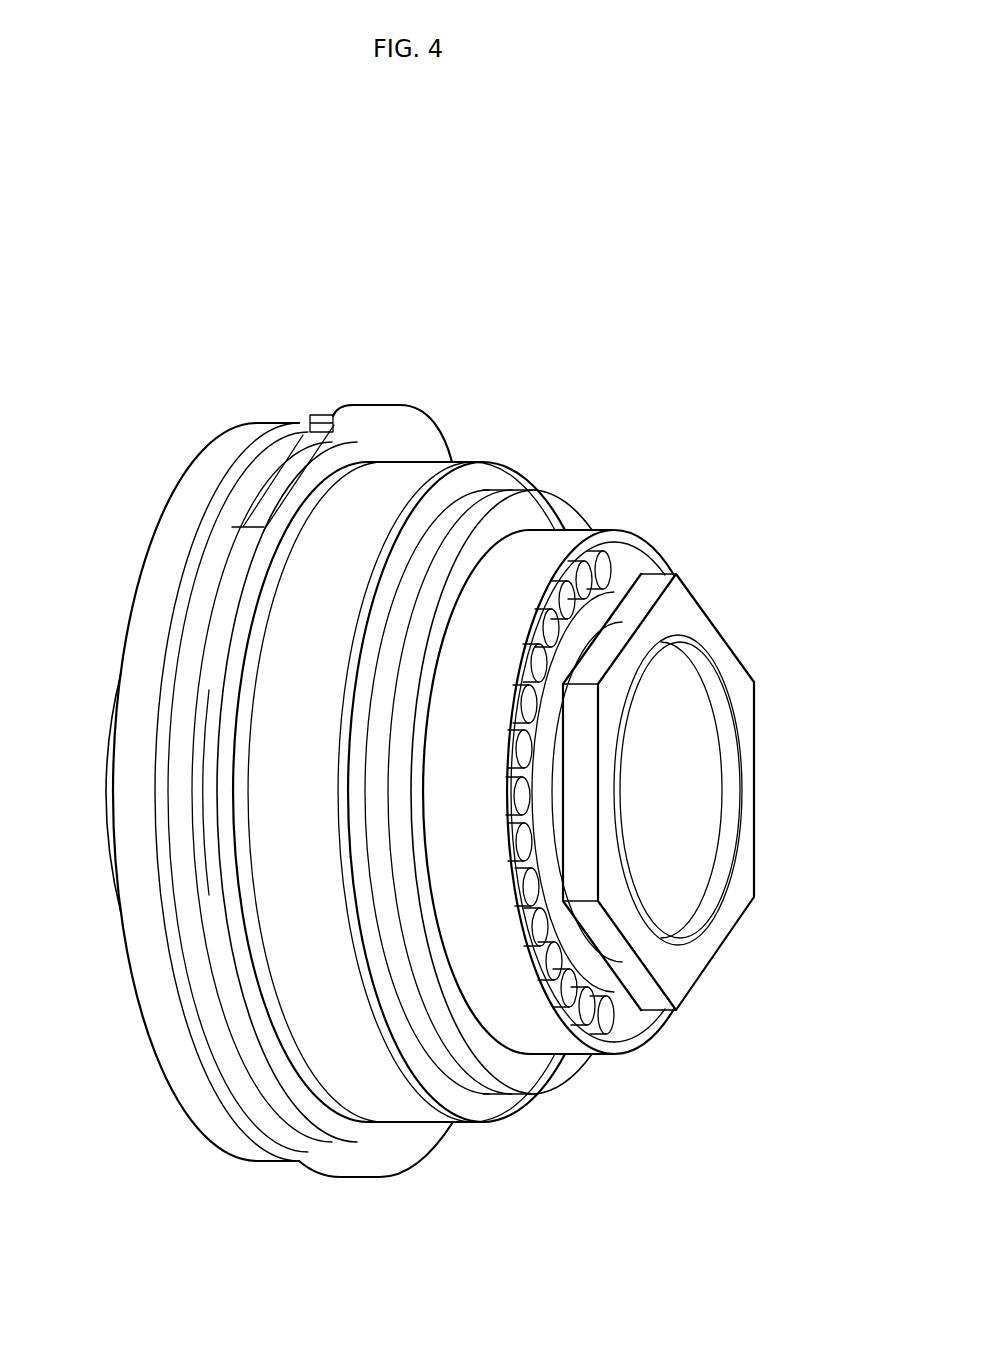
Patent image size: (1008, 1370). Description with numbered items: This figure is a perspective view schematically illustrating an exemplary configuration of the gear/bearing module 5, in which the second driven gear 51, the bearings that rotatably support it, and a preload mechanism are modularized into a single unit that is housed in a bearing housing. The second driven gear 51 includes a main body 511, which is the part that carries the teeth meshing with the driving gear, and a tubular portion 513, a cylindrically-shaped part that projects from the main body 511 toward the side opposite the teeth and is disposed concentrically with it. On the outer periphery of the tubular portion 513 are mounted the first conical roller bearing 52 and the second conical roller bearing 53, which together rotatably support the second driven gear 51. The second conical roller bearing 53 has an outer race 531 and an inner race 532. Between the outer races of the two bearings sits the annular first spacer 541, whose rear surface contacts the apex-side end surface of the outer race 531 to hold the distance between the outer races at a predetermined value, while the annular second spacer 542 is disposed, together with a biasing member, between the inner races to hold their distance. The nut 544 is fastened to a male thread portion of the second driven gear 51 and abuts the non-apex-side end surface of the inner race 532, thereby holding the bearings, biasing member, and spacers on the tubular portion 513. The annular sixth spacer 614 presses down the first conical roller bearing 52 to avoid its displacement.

The gear/bearing module 5 is at (374, 212).
The second driven gear 51 is at (488, 770).
The main body 511 is at (190, 512).
The tubular portion 513 is at (683, 740).
The first conical roller bearing 52 is at (378, 1083).
The second conical roller bearing 53 is at (602, 819).
The outer race 531 is at (555, 548).
The inner race 532 is at (624, 564).
The first spacer 541 is at (510, 515).
The second spacer 542 is at (493, 1105).
The nut 544 is at (685, 975).
The sixth spacer 614 is at (385, 415).